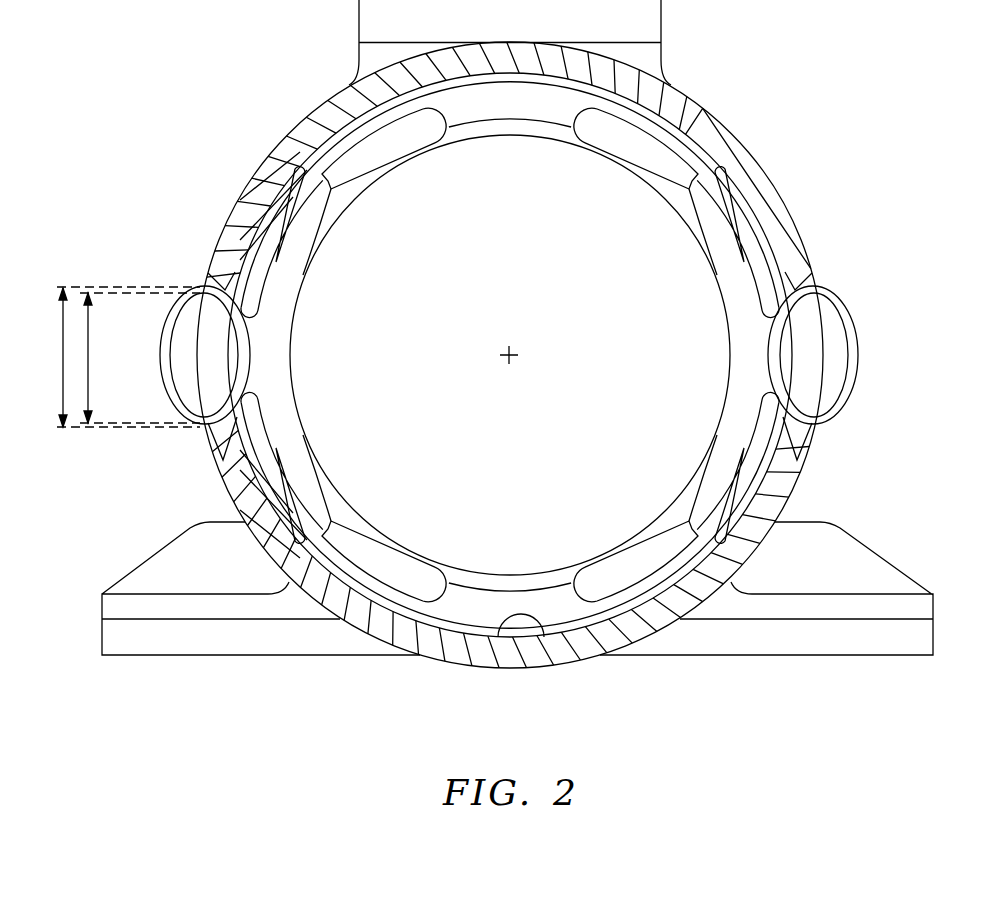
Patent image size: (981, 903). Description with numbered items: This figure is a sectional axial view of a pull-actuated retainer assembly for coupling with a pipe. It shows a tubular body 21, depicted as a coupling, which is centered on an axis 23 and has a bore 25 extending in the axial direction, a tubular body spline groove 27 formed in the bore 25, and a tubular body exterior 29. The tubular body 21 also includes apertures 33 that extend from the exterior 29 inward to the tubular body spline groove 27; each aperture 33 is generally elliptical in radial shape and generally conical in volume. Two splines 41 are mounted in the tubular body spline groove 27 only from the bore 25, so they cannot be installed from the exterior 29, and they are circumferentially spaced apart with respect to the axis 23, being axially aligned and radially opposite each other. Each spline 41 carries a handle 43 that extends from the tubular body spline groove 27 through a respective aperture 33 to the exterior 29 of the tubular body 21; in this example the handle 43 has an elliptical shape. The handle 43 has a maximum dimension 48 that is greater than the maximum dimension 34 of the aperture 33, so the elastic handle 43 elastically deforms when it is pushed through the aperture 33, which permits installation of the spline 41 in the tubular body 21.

The tubular body 21 is at (728, 60).
The axis 23 is at (518, 351).
The bore 25 is at (518, 564).
The tubular body spline groove 27 is at (546, 638).
The tubular body exterior 29 is at (216, 214).
The aperture 33 is at (206, 433).
The maximum dimension of the aperture 34 is at (89, 366).
The spline 41 is at (588, 160).
The handle 43 is at (168, 336).
The maximum dimension of the handle 48 is at (63, 358).